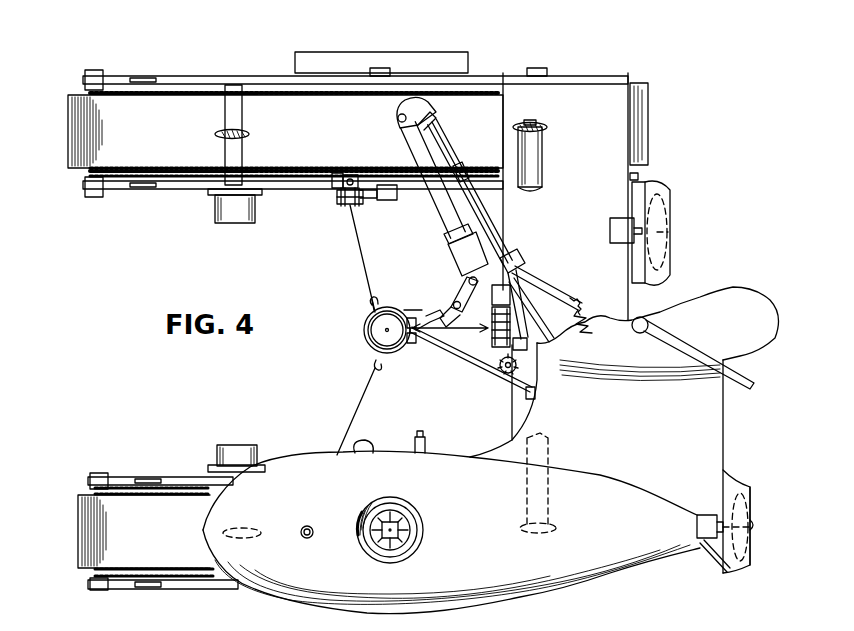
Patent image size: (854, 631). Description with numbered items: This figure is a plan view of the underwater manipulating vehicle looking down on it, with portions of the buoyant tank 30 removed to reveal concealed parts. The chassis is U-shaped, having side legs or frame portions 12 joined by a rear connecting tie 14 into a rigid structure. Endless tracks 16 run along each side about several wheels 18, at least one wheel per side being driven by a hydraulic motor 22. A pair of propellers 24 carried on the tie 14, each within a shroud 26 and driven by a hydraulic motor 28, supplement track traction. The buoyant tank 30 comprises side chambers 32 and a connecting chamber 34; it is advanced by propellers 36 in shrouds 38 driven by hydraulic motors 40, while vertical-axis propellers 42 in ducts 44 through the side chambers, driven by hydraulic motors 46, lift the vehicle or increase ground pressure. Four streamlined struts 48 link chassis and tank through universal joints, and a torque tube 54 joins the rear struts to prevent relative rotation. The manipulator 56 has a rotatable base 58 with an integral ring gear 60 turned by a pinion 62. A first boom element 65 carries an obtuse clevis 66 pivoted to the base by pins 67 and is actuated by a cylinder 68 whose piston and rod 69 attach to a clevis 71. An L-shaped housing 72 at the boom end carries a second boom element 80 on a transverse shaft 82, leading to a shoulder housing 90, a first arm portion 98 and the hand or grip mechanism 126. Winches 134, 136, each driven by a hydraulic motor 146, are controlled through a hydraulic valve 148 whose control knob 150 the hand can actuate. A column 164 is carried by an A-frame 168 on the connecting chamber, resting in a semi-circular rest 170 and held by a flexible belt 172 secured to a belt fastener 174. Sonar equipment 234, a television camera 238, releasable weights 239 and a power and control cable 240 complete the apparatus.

The side legs or frame portions 12 is at (182, 78).
The rear connecting tie or bight portion 14 is at (565, 196).
The endless tracks 16 is at (90, 134).
The wheels 18 is at (195, 189).
The hydraulic motor 22 is at (236, 214).
The propellers 24 is at (668, 246).
The shroud 26 is at (662, 189).
The hydraulic motor 28 is at (620, 234).
The buoyant tank 30 is at (618, 596).
The side chambers 32 is at (437, 594).
The connecting chamber 34 is at (710, 450).
The propellers 36 is at (750, 549).
The shrouds 38 is at (735, 574).
The hydraulic motor 40 is at (700, 529).
The propellers 42 is at (373, 550).
The ducts 44 is at (366, 514).
The hydraulic motors 46 is at (400, 538).
The elongated connecting struts 48 is at (249, 134).
The torque tube 54 is at (541, 161).
The manipulator 56 is at (439, 253).
The rotatable base 58 is at (621, 319).
The ring gear 60 is at (556, 294).
The pinion 62 is at (497, 379).
The first boom element 65 is at (494, 218).
The obtuse clevis 66 is at (538, 277).
The pins 67 is at (590, 302).
The cylinder 68 is at (578, 329).
The piston and rod 69 is at (500, 234).
The clevis 71 is at (459, 166).
The L-shaped housing 72 is at (430, 105).
The second boom element 80 is at (442, 205).
The transverse shaft or pin 82 is at (397, 118).
The shoulder housing 90 is at (462, 264).
The first arm portion 98 is at (467, 297).
The hand or grip mechanism 126 is at (420, 346).
The winch 134 is at (347, 216).
The winch 136 is at (450, 326).
The hydraulic motor 146 is at (387, 201).
The hydraulic valve 148 is at (334, 188).
The control knob 150 is at (352, 176).
The hollow elongated column or pipe 164 is at (365, 322).
The A-frame 168 is at (471, 367).
The semi-circular rest 170 is at (404, 346).
The flexible belt 172 is at (368, 342).
The belt fastener 174 is at (407, 316).
The sonar equipment 234 is at (310, 539).
The television camera 238 is at (437, 343).
The releasable weights 239 is at (362, 60).
The cable 240 is at (755, 386).